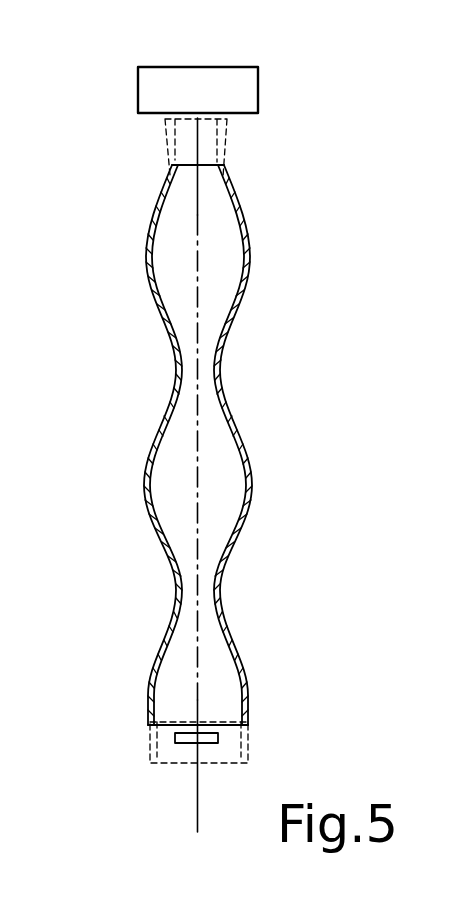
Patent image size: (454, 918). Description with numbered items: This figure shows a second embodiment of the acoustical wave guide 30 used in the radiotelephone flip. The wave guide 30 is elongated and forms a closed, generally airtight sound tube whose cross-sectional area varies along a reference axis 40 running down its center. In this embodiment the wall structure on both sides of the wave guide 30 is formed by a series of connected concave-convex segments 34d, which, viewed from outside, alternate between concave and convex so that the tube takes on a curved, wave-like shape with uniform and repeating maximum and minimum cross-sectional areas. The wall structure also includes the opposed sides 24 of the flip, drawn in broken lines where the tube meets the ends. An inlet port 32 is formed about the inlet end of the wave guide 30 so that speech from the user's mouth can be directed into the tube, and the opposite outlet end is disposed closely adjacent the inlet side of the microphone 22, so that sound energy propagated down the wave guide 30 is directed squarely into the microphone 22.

The microphone 22 is at (257, 73).
The side of the flip 24 is at (208, 148).
The wave guide 30 is at (244, 445).
The inlet port 32 is at (180, 736).
The concave-convex segments 34d is at (147, 256).
The reference axis 40 is at (197, 815).